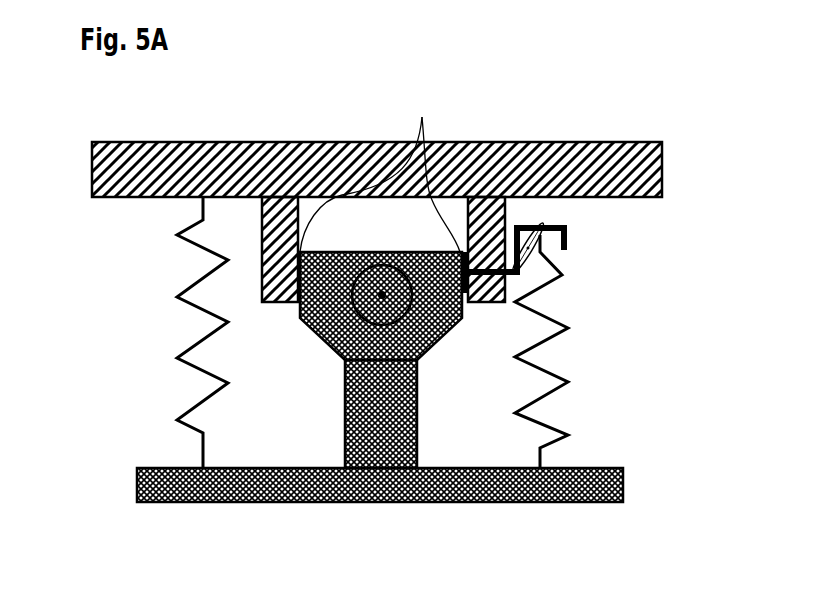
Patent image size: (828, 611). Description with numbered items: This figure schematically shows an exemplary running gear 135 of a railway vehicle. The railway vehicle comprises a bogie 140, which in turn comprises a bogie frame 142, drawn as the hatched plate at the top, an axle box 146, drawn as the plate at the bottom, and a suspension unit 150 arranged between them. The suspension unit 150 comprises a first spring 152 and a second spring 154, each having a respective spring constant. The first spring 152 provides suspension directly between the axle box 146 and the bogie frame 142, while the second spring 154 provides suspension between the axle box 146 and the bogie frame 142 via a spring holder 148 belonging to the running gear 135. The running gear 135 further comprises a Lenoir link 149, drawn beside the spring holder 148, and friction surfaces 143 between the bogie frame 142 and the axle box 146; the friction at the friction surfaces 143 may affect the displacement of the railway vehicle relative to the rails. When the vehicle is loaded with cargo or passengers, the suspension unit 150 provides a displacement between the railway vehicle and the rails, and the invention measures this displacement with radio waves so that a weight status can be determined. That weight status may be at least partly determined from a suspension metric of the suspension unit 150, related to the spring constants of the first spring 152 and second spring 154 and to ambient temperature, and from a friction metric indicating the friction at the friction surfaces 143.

The running gear 135 is at (251, 135).
The bogie 140 is at (361, 134).
The bogie frame 142 is at (118, 197).
The friction surfaces 143 is at (381, 278).
The axle box 146 is at (338, 480).
The spring holder 148 is at (567, 237).
The Lenoir link 149 is at (536, 252).
The suspension unit 150 is at (169, 379).
The first spring 152 is at (187, 300).
The second spring 154 is at (556, 392).